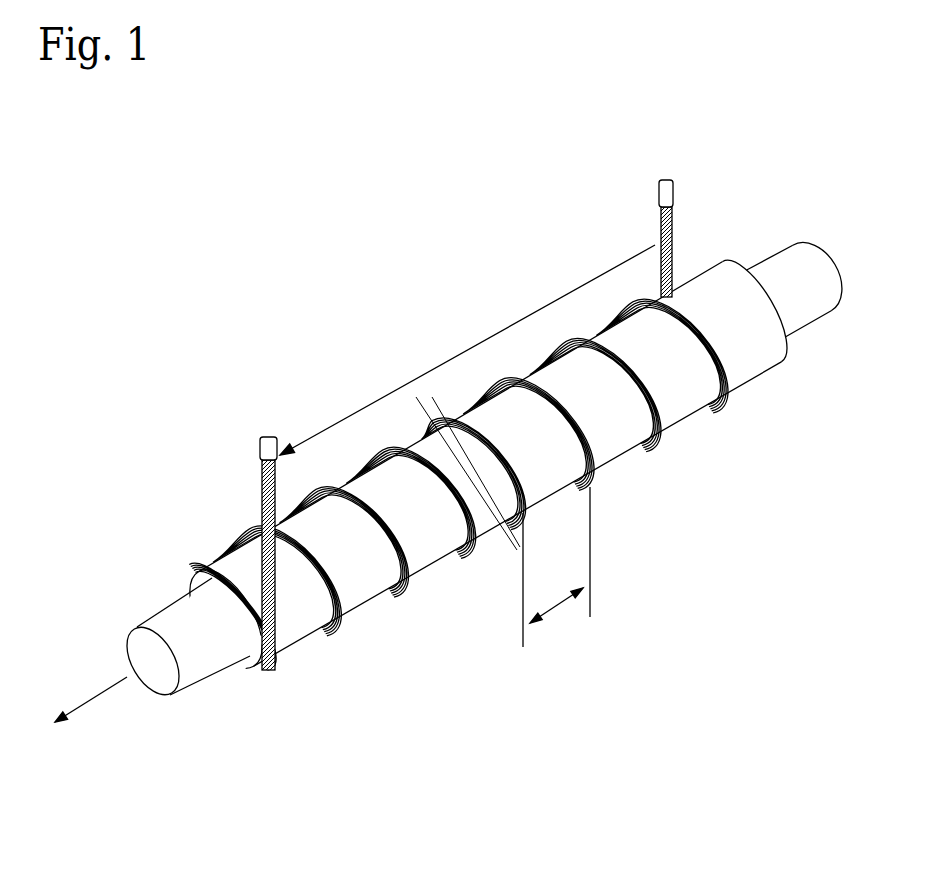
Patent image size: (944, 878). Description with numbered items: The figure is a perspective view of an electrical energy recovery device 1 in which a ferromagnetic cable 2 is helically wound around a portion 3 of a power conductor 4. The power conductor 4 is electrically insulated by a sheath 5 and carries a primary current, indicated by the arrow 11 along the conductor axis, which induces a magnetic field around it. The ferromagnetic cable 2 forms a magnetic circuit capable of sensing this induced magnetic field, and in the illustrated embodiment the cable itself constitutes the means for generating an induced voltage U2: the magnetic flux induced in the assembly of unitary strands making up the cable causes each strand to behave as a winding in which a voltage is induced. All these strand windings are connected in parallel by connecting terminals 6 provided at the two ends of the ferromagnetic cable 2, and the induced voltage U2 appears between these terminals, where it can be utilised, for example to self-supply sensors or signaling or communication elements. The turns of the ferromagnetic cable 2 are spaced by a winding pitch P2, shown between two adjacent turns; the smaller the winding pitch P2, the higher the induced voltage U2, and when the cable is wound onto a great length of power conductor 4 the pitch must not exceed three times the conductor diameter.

The electrical energy recovery device 1 is at (697, 243).
The ferromagnetic cable 2 is at (663, 450).
The portion of power conductor 3 is at (753, 387).
The power conductor 4 is at (823, 300).
The sheath 5 is at (192, 581).
The connecting terminals 6 is at (259, 448).
The axial direction 11 is at (91, 690).
The induced voltage U2 is at (467, 350).
The winding pitch P2 is at (556, 567).